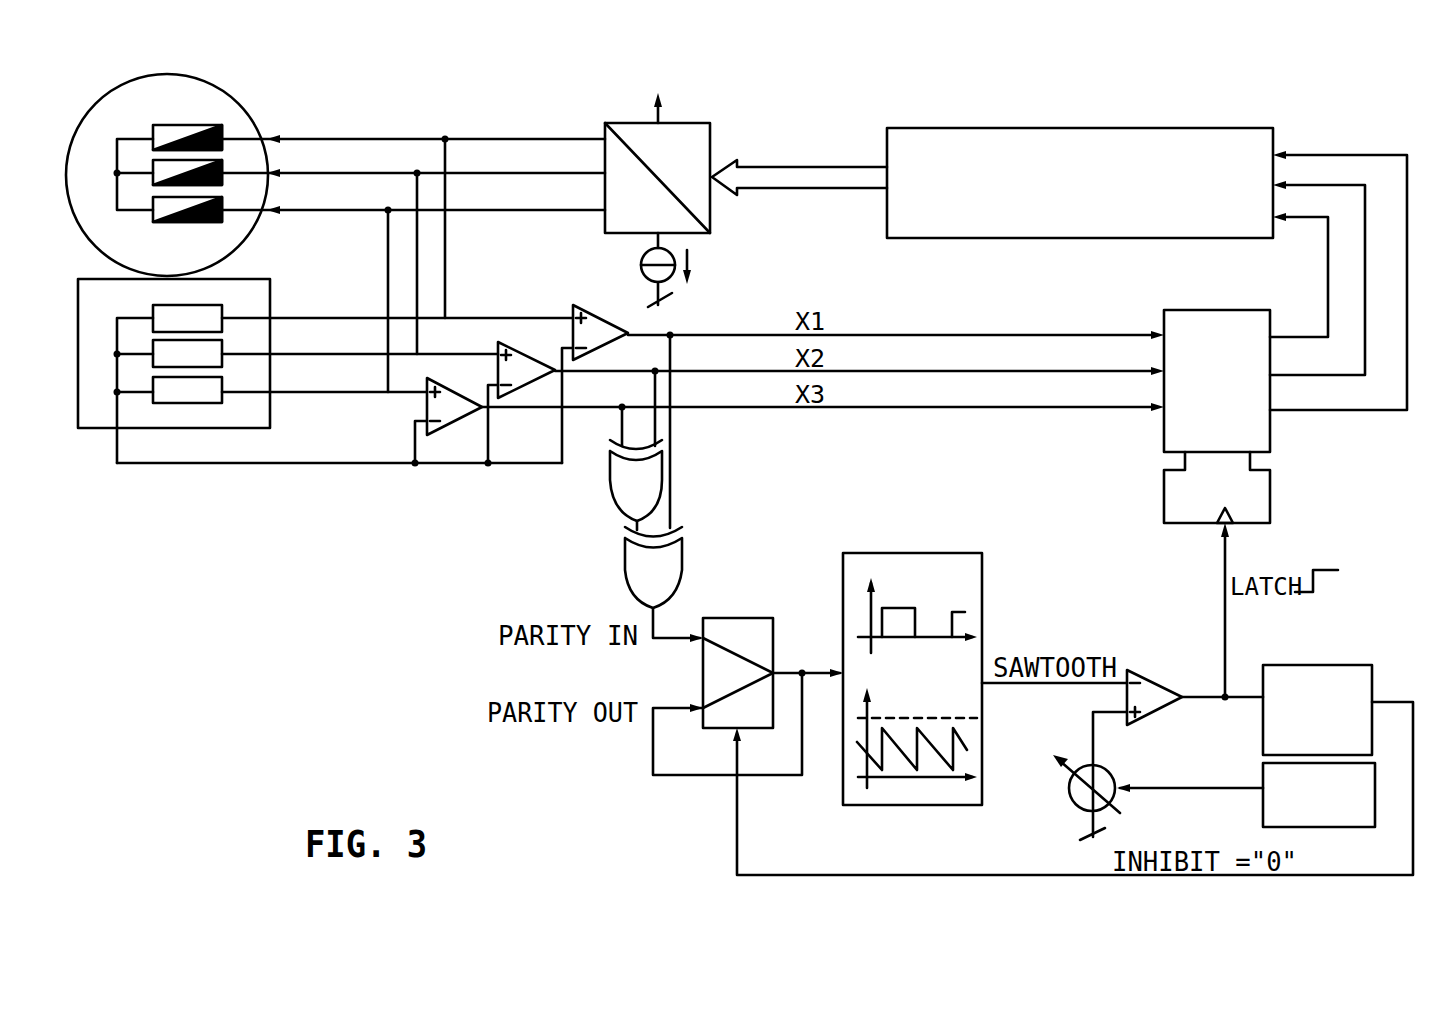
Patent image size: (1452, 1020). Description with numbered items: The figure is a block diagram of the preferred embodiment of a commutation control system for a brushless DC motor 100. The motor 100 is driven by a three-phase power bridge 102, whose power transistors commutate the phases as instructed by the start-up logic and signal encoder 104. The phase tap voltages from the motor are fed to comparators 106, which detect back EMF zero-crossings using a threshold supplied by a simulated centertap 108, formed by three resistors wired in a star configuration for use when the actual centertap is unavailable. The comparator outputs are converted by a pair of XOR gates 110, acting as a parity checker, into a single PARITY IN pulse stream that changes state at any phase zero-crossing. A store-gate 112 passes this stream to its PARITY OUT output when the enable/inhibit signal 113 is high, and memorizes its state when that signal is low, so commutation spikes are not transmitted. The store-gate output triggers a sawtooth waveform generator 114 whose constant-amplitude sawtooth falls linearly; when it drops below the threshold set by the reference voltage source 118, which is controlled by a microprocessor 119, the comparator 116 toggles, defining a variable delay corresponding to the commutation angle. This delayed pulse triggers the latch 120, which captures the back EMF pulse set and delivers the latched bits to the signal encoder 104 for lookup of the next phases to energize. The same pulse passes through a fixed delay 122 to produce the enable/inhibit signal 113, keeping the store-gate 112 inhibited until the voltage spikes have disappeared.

The brushless DC motor 100 is at (335, 230).
The three-phase power bridge 102 is at (699, 187).
The start-up logic and signal encoder 104 is at (992, 208).
The comparators 106 is at (372, 405).
The simulated centertap 108 is at (325, 359).
The pair of XOR gates 110 is at (693, 541).
The store-gate 112 is at (733, 720).
The enable/inhibit signal 113 is at (1073, 817).
The sawtooth waveform generator 114 is at (951, 680).
The comparator 116 is at (1178, 680).
The reference voltage source 118 is at (1158, 802).
The microprocessor 119 is at (1334, 818).
The latch 120 is at (1285, 337).
The fixed delay 122 is at (1332, 690).